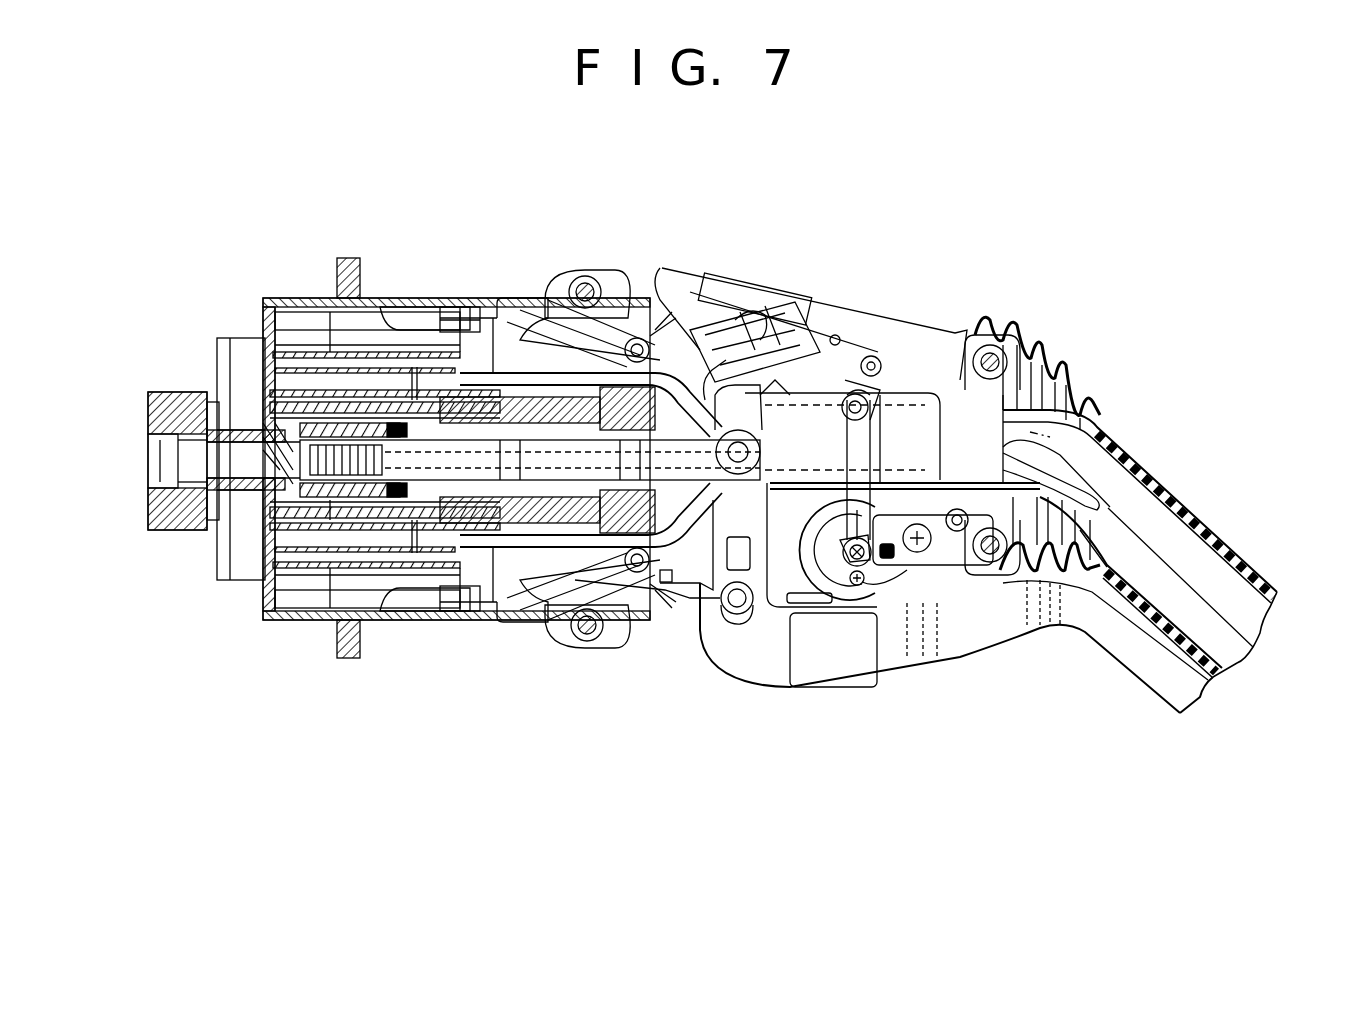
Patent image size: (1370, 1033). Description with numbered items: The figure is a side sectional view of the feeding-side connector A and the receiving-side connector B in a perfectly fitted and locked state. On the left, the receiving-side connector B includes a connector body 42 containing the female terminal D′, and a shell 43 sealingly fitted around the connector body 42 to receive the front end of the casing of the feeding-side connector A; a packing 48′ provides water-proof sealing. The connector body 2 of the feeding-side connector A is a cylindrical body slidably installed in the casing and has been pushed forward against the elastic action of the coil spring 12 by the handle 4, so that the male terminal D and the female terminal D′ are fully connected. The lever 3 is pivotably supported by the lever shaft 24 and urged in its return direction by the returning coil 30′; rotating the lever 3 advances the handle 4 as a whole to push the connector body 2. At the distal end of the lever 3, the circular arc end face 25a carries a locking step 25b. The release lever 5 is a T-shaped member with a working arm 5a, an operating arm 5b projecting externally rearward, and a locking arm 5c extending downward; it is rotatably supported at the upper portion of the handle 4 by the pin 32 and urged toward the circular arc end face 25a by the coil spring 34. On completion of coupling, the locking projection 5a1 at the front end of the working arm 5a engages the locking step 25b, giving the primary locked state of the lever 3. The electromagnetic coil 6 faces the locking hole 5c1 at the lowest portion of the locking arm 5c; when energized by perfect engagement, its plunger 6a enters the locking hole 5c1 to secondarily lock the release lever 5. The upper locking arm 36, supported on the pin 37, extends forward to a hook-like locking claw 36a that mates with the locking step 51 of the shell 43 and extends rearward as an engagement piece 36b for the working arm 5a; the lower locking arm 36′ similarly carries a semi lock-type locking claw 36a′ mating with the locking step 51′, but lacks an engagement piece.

The receiving-side connector B is at (175, 355).
The connector body 42 is at (235, 338).
The connector body 2 is at (300, 352).
The shell 43 is at (350, 290).
The locking claw 36a is at (395, 308).
The locking step 51 is at (452, 308).
The coil spring 12 is at (472, 390).
The locking arm 36 is at (533, 300).
The pin 37 is at (645, 345).
The circular arc end face 25a is at (712, 330).
The locking step 25b is at (740, 420).
The engagement piece 36b is at (748, 325).
The locking projection 5a1 is at (812, 375).
The coil spring 34 is at (873, 356).
The pin 32 is at (900, 425).
The working arm 5a is at (830, 350).
The handle 4 is at (930, 420).
The feeding-side connector A is at (1005, 300).
The operating arm 5b is at (1060, 428).
The release lever 5 is at (920, 470).
The locking arm 5c is at (840, 520).
The locking hole 5c1 is at (848, 545).
The electromagnetic coil 6 is at (878, 595).
The plunger 6a is at (855, 565).
The male terminal D is at (440, 462).
The female terminal D′ is at (332, 500).
The packing 48′ is at (263, 528).
The locking claw 36a′ is at (405, 610).
The locking step 51′ is at (450, 612).
The locking arm 36′ is at (560, 632).
The returning coil 30′ is at (676, 596).
The lever shaft 24 is at (735, 612).
The lever 3 is at (1165, 708).